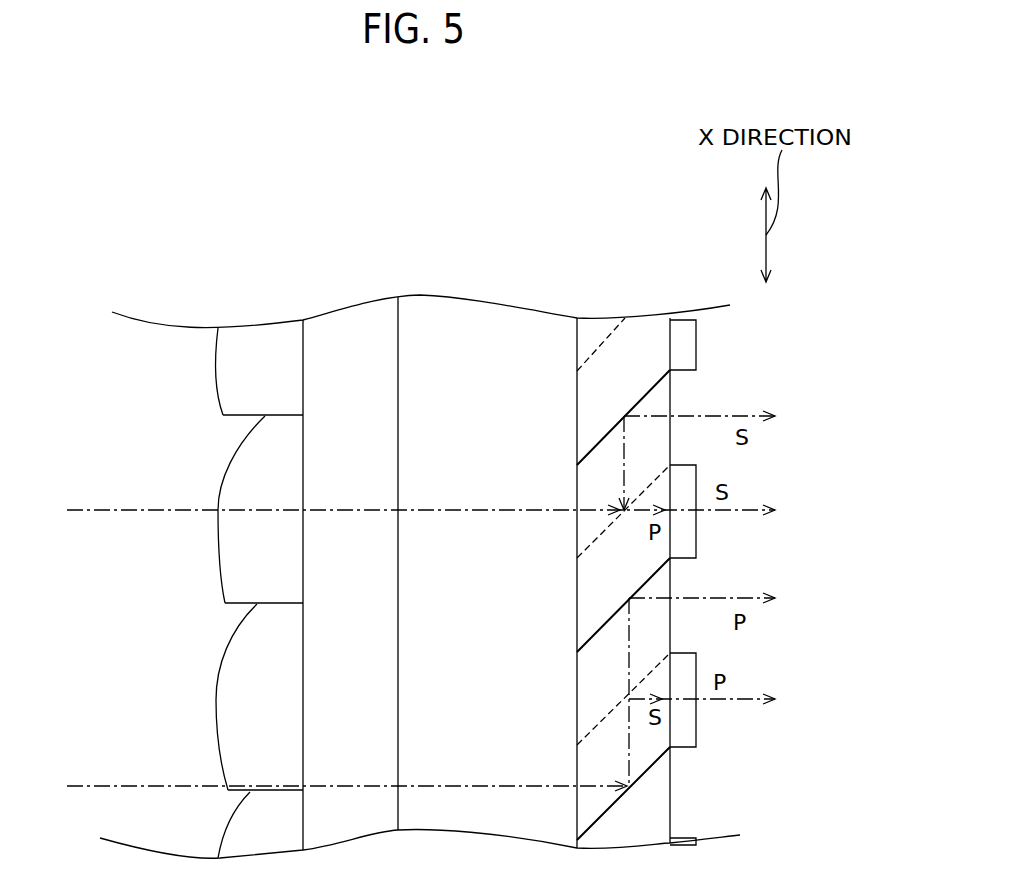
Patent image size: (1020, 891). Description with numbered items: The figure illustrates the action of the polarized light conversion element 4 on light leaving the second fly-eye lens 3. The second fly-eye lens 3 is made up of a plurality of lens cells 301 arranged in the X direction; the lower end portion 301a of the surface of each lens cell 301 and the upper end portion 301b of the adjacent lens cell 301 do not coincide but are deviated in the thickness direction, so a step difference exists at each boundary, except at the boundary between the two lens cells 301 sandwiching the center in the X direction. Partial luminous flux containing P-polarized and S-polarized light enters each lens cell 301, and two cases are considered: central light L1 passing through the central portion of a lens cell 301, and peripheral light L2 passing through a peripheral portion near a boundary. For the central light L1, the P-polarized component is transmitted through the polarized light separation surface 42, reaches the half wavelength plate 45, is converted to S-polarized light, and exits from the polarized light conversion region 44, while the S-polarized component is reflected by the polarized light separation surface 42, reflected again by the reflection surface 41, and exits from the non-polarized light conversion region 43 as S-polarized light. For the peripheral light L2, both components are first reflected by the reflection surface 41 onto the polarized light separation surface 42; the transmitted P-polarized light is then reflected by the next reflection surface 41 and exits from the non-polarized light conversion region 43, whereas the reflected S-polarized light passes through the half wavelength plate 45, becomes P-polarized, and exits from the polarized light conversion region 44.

The second fly-eye lens 3 is at (265, 330).
The lens cell 301 is at (221, 378).
The end portion 301a is at (222, 415).
The end portion 301b is at (262, 419).
The polarized light conversion element 4 is at (640, 330).
The reflection surface 41 is at (593, 447).
The polarized light separation surface 42 is at (593, 349).
The non-polarized light conversion region 43 is at (665, 398).
The polarized light conversion region 44 is at (585, 388).
The ½ wavelength plate 45 is at (690, 343).
The central light L1 is at (130, 510).
The peripheral light L2 is at (130, 786).